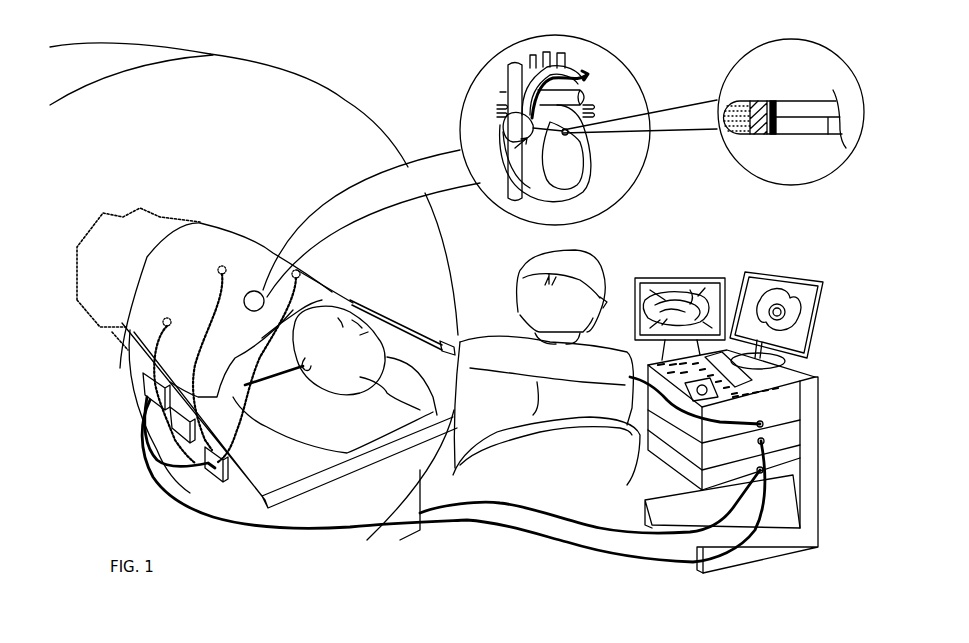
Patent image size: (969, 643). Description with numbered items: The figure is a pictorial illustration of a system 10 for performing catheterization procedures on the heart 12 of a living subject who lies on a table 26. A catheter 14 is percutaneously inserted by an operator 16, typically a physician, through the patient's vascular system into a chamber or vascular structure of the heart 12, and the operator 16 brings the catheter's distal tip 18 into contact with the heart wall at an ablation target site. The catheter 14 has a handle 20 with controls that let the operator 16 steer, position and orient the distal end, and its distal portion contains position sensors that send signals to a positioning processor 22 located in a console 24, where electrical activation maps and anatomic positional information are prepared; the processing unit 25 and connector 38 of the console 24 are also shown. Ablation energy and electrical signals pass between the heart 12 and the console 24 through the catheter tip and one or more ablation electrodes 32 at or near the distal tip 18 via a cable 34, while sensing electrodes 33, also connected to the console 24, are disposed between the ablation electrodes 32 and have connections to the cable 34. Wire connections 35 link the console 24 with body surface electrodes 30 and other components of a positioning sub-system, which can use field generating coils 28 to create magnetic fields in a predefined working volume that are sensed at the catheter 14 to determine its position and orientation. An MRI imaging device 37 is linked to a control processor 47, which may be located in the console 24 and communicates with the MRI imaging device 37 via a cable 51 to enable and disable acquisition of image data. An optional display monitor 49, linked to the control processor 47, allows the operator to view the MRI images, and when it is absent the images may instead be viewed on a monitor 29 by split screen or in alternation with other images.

The system 10 is at (874, 205).
The heart 12 is at (593, 185).
The catheter 14 is at (398, 324).
The operator 16 is at (475, 336).
The distal tip 18 is at (766, 100).
The handle 20 is at (439, 342).
The processor 22 is at (802, 437).
The console 24 is at (756, 458).
The processor unit 25 is at (800, 392).
The table / bed 26 is at (455, 538).
The field generating coils 28 is at (185, 430).
The monitor 29 is at (818, 294).
The body surface electrodes 30 is at (218, 269).
The ablation electrodes 32 is at (743, 101).
The sensing electrodes 33 is at (773, 134).
The cable 34 is at (829, 134).
The wire connections 35 is at (152, 342).
The MRI imaging device 37 is at (333, 90).
The cable connector 38 is at (682, 420).
The control processor 47 is at (802, 460).
The display monitor 49 is at (681, 280).
The cable 51 is at (562, 511).